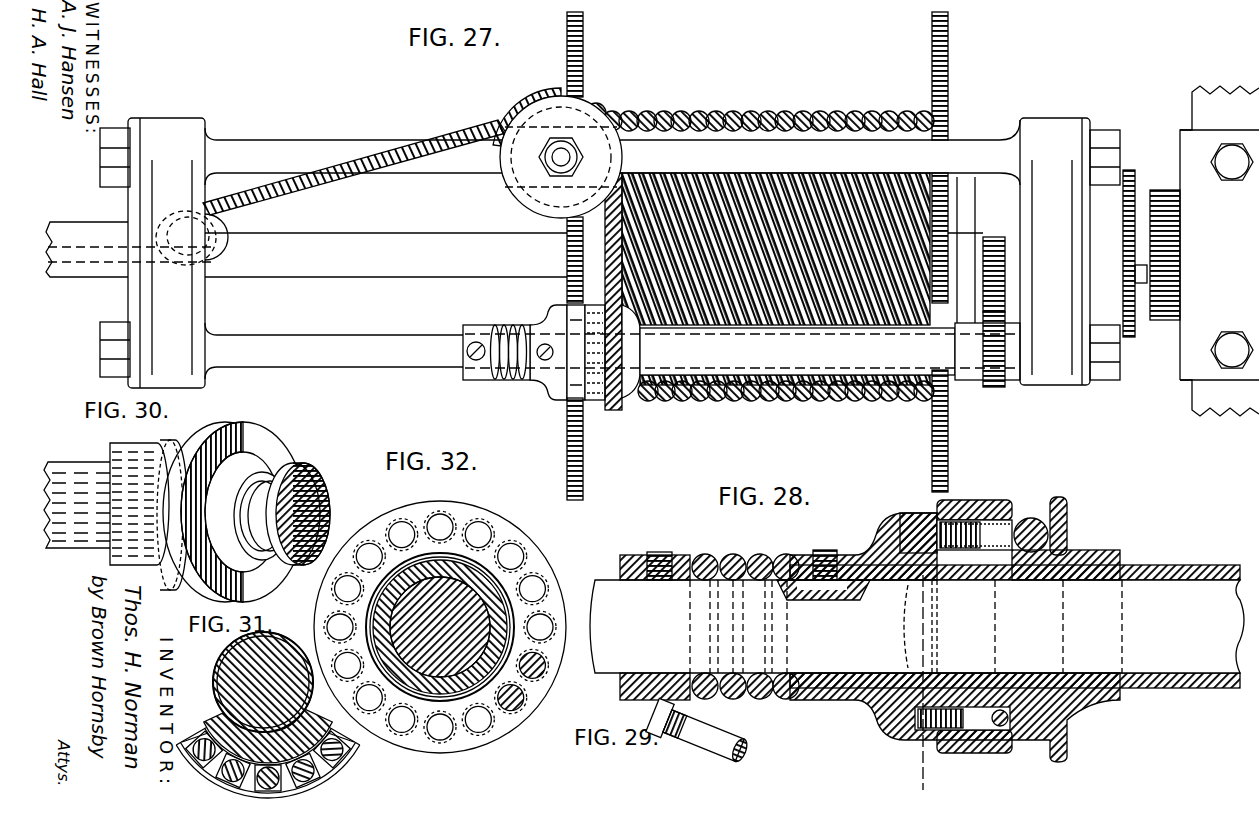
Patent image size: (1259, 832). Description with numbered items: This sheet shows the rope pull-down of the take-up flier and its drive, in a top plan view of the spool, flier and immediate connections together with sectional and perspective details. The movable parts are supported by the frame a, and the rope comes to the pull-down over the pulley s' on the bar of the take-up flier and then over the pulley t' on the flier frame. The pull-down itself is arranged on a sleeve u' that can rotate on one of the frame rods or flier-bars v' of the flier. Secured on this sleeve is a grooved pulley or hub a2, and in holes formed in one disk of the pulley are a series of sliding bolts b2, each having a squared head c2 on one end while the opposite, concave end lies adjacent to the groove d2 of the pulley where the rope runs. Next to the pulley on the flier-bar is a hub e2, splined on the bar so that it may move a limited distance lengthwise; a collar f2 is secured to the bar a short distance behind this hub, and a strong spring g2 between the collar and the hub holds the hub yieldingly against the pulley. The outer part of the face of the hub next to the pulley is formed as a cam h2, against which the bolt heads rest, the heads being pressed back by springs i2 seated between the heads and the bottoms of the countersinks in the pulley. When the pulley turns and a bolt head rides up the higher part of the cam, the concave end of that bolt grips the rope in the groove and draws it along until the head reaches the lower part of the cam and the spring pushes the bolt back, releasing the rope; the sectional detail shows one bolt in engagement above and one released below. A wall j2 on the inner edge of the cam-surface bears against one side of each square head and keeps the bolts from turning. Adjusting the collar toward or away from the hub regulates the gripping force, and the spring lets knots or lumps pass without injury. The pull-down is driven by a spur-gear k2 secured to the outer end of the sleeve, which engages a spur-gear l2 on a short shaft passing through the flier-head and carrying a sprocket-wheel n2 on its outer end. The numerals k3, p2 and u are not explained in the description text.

In FIG. 27, the pulley s' is at (197, 235).
In FIG. 27, the rod k3 is at (386, 255).
In FIG. 27, the pulley t' is at (412, 153).
In FIG. 27, the frame rod or flier-bar v' is at (334, 351).
In FIG. 28, the frame rod or flier-bar v' is at (917, 626).
In FIG. 30, the frame rod or flier-bar v' is at (316, 514).
In FIG. 31, the frame rod or flier-bar v' is at (250, 682).
In FIG. 32, the frame rod or flier-bar v' is at (485, 638).
In FIG. 27, the collar f2 is at (496, 338).
In FIG. 28, the collar f2 is at (638, 553).
In FIG. 27, the hub e2 is at (589, 291).
In FIG. 28, the hub e2 is at (910, 521).
In FIG. 30, the hub e2 is at (201, 493).
In FIG. 27, the spring g2 is at (499, 379).
In FIG. 28, the spring g2 is at (735, 562).
In FIG. 27, the grooved pulley or hub a2 is at (642, 350).
In FIG. 28, the grooved pulley or hub a2 is at (962, 500).
In FIG. 32, the grooved pulley or hub a2 is at (440, 627).
In FIG. 27, the sleeve u' is at (797, 351).
In FIG. 32, the sleeve u' is at (469, 621).
In FIG. 27, the spur-gear l2 is at (991, 237).
In FIG. 27, the spur-gear k2 is at (990, 388).
In FIG. 27, the sprocket-wheel n2 is at (1128, 170).
In FIG. 27, the frame a is at (1219, 251).
In FIG. 27, the plunger p2 is at (1165, 274).
In FIG. 28, the plunger p2 is at (990, 528).
In FIG. 28, the cam h2 is at (885, 526).
In FIG. 30, the cam h2 is at (272, 443).
In FIG. 31, the cam h2 is at (268, 695).
In FIG. 28, the groove d2 is at (1066, 535).
In FIG. 28, the sleeve u is at (1015, 613).
In FIG. 28, the spring i2 is at (950, 752).
In FIG. 29, the sliding bolt b2 is at (696, 735).
In FIG. 31, the sliding bolt b2 is at (355, 763).
In FIG. 32, the sliding bolt b2 is at (517, 708).
In FIG. 29, the squared head c2 is at (670, 740).
In FIG. 31, the squared head c2 is at (322, 772).
In FIG. 30, the wall j2 is at (268, 445).
In FIG. 31, the wall j2 is at (337, 738).